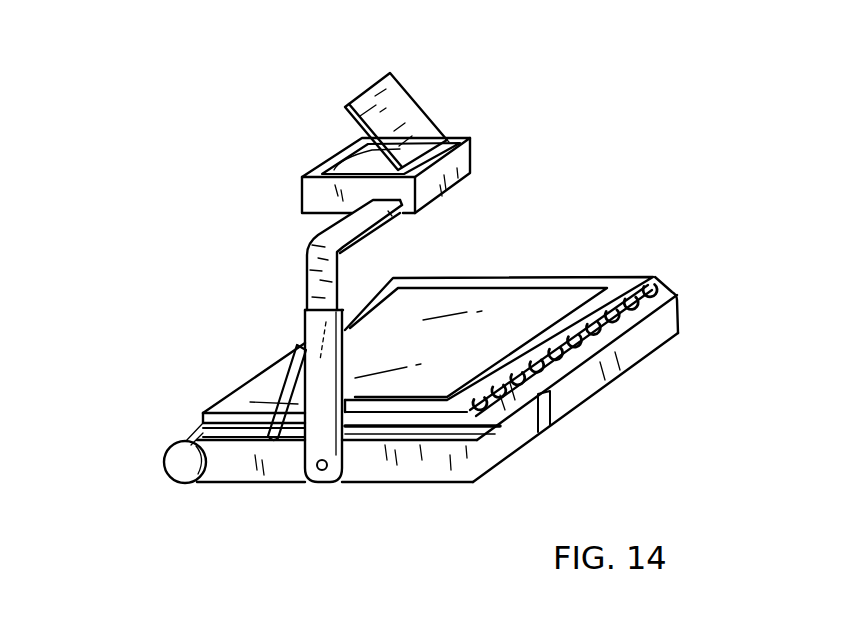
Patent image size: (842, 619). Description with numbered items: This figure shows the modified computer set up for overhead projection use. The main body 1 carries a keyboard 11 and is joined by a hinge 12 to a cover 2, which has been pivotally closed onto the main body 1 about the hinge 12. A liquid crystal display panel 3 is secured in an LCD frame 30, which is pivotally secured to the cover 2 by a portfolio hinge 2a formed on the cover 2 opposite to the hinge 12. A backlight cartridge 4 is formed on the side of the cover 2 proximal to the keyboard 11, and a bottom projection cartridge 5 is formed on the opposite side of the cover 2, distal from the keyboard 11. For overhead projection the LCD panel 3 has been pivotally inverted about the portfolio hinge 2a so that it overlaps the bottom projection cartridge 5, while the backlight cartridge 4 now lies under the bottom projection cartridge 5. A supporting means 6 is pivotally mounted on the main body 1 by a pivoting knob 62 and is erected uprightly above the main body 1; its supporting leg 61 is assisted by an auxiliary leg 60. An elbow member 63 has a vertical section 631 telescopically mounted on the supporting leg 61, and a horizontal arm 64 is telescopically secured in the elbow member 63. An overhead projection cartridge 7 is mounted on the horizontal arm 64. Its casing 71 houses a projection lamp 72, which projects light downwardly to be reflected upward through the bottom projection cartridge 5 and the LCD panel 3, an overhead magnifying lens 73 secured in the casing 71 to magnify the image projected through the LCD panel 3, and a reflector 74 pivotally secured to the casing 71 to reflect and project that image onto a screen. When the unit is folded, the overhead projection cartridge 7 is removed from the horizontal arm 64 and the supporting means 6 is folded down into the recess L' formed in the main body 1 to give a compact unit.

The main body 1 is at (432, 365).
The keyboard 11 is at (668, 295).
The hinge 12 is at (177, 465).
The cover 2 is at (514, 356).
The portfolio hinge 2a is at (627, 280).
The liquid crystal display panel 3 is at (529, 303).
The LCD frame 30 is at (230, 403).
The backlight cartridge 4 is at (378, 435).
The bottom projection cartridge 5 is at (422, 430).
The supporting means 6 is at (346, 362).
The auxiliary leg 60 is at (257, 420).
The supporting leg 61 is at (300, 440).
The pivoting knob 62 is at (323, 470).
The elbow member 63 is at (330, 240).
The vertical section 631 is at (313, 298).
The horizontal arm 64 is at (390, 214).
The overhead projection cartridge 7 is at (444, 96).
The casing 71 is at (458, 165).
The projection lamp 72 is at (455, 125).
The overhead magnifying lens 73 is at (352, 168).
The reflector 74 is at (402, 108).
The recess L' is at (556, 432).